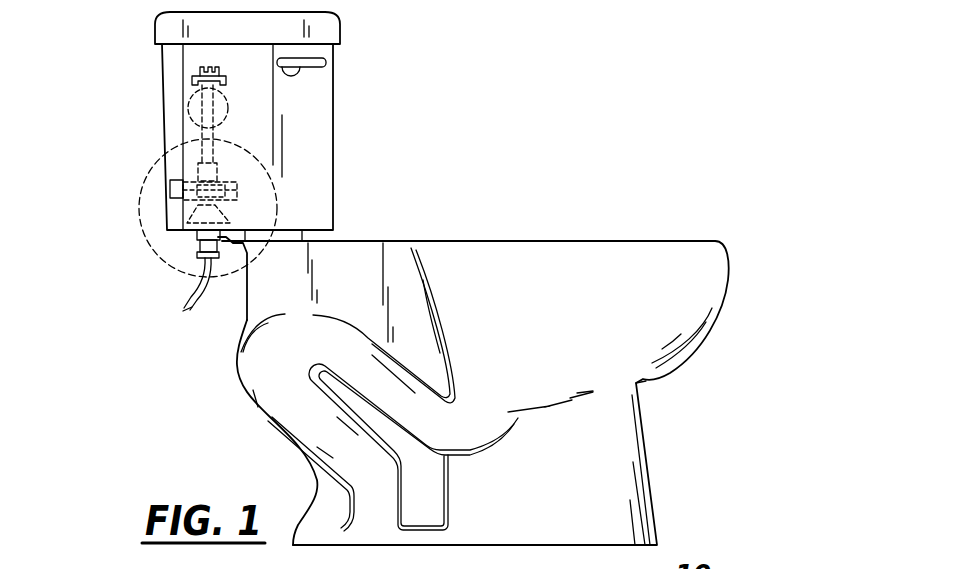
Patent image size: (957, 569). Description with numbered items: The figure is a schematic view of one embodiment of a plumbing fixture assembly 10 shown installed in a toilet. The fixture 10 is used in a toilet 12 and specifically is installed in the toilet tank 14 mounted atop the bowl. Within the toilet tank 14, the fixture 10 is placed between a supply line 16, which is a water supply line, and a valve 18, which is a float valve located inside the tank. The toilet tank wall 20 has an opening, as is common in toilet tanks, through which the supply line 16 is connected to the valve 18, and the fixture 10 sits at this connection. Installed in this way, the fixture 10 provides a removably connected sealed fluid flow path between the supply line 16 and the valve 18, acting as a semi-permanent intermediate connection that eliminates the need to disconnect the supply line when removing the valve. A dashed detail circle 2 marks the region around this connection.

The detail region shown in FIG. 2 is at (150, 247).
The plumbing fixture assembly 10 is at (243, 183).
The toilet 12 is at (450, 159).
The toilet tank 14 is at (337, 108).
The supply line 16 is at (186, 300).
The valve 18 is at (202, 158).
The toilet tank wall 20 is at (178, 234).